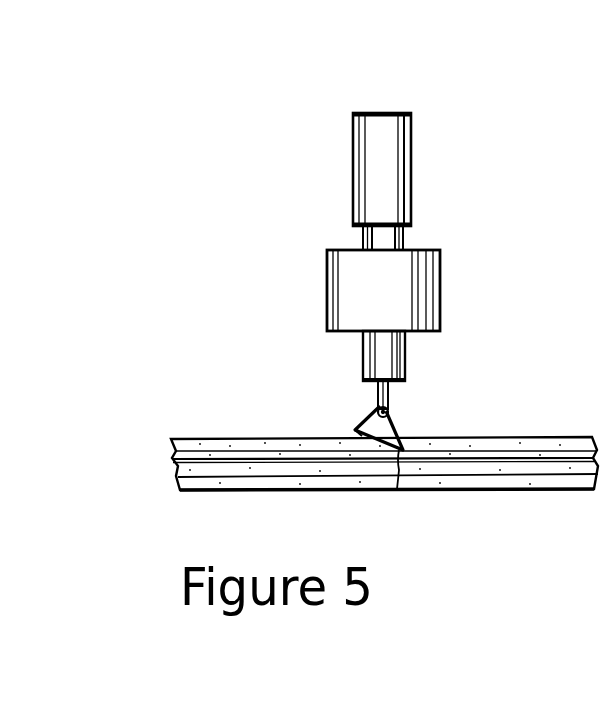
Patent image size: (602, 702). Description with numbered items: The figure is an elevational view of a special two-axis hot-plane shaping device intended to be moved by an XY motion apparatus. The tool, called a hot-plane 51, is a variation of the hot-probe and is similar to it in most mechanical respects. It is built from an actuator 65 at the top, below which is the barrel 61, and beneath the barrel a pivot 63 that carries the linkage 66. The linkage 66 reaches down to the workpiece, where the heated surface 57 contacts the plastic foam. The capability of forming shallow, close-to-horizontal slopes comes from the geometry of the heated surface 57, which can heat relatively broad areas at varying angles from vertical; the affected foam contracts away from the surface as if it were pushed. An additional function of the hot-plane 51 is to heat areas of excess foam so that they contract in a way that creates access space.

The hot-plane 51 is at (450, 83).
The actuator 65 is at (377, 155).
The barrel 61 is at (375, 241).
The pivot 63 is at (391, 412).
The linkage 66 is at (360, 407).
The heated surface 57 is at (378, 445).